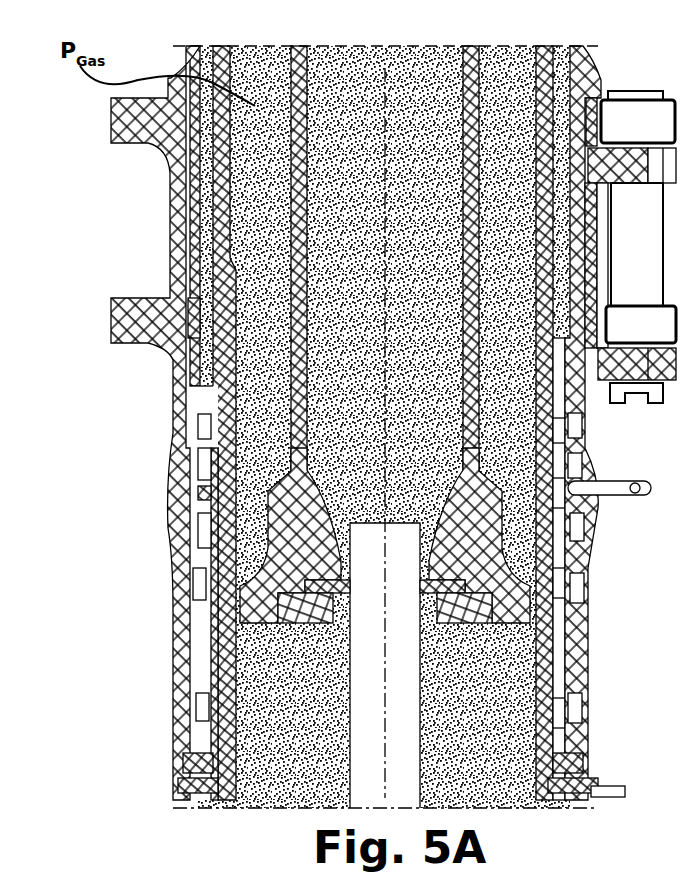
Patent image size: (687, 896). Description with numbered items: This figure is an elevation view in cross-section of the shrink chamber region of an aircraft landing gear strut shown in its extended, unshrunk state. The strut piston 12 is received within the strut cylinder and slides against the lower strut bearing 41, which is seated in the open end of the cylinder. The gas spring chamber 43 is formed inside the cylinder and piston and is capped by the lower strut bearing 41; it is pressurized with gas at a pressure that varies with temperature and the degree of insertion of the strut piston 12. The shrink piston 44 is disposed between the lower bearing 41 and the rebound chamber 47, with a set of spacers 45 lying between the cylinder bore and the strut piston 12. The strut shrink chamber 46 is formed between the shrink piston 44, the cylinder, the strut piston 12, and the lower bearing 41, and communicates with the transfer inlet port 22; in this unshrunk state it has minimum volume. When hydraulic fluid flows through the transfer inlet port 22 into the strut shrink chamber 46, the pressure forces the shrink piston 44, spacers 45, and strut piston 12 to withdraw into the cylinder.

The gas spring chamber 43 is at (255, 214).
The set of spacers 45 is at (200, 300).
The rebound chamber 47 is at (195, 378).
The shrink piston 44 is at (195, 441).
The strut shrink chamber 46 is at (195, 478).
The lower strut bearing 41 is at (195, 700).
The transfer inlet port 22 is at (618, 488).
The strut piston 12 is at (545, 697).